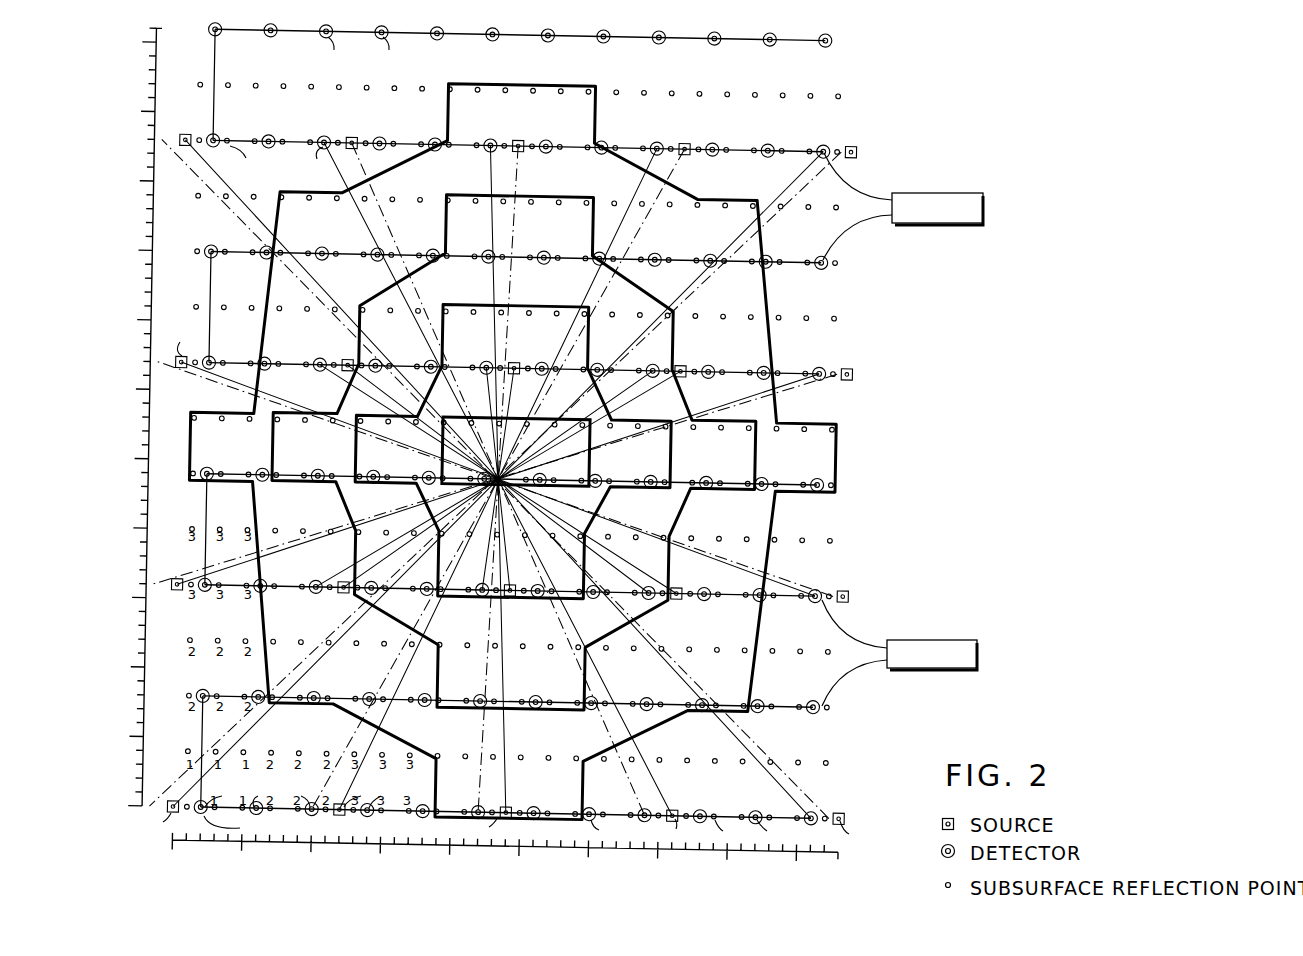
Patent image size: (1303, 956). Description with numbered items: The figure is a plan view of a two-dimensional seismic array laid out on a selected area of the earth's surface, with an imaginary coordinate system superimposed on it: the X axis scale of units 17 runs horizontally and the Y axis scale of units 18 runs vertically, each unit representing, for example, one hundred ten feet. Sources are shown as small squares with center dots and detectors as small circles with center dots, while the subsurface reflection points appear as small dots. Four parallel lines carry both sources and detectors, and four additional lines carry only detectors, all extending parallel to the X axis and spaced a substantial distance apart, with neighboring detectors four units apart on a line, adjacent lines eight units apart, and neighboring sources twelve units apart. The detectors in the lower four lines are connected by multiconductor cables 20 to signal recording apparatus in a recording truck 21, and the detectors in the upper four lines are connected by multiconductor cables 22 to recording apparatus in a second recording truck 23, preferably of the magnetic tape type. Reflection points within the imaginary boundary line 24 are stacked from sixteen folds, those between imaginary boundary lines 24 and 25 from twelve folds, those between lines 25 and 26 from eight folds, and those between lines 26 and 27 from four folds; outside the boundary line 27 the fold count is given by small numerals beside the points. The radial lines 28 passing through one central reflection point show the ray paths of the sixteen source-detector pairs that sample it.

The X axis scale of units 17 is at (161, 848).
The Y axis scale of units 18 is at (121, 814).
The multiconductor cables 20 is at (793, 478).
The recording truck 21 is at (979, 652).
The multiconductor cables 22 is at (742, 42).
The second recording truck 23 is at (985, 205).
The imaginary boundary line 24 is at (591, 458).
The imaginary boundary line 25 is at (605, 503).
The imaginary boundary line 26 is at (652, 600).
The imaginary boundary line 27 is at (667, 720).
The radial lines 28 is at (392, 213).